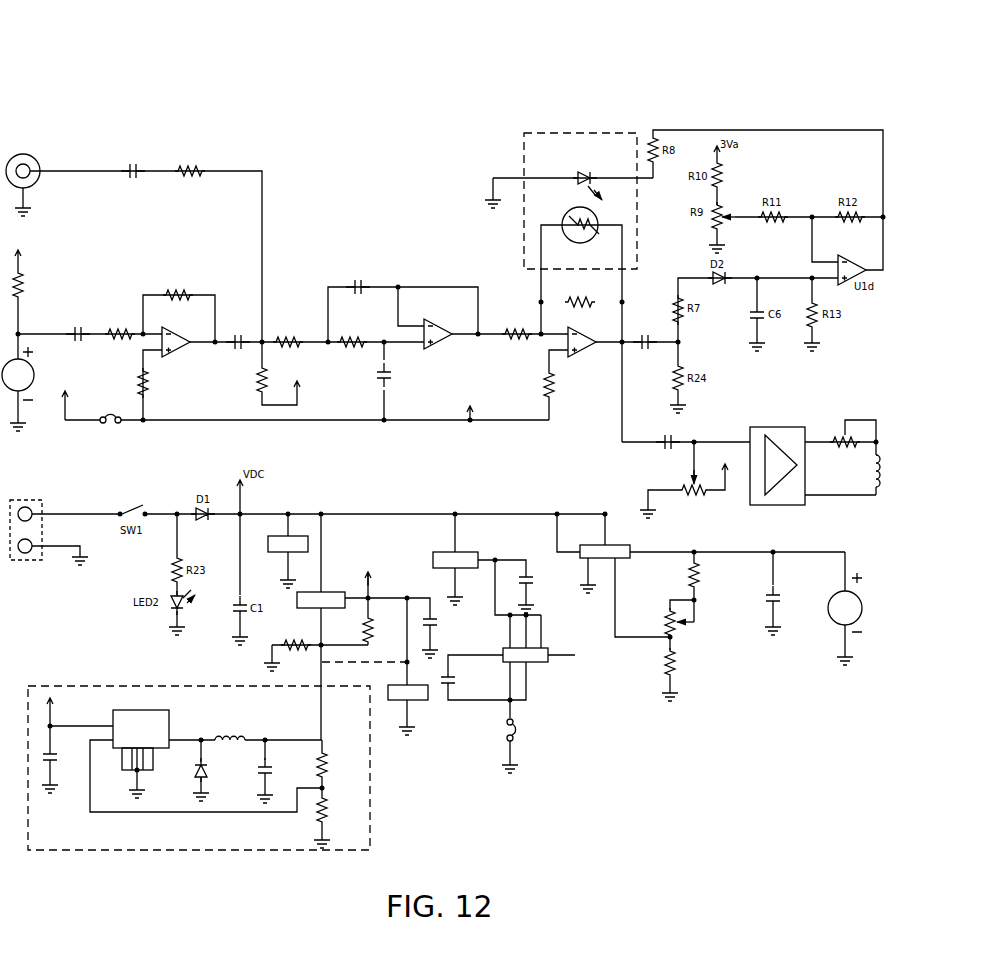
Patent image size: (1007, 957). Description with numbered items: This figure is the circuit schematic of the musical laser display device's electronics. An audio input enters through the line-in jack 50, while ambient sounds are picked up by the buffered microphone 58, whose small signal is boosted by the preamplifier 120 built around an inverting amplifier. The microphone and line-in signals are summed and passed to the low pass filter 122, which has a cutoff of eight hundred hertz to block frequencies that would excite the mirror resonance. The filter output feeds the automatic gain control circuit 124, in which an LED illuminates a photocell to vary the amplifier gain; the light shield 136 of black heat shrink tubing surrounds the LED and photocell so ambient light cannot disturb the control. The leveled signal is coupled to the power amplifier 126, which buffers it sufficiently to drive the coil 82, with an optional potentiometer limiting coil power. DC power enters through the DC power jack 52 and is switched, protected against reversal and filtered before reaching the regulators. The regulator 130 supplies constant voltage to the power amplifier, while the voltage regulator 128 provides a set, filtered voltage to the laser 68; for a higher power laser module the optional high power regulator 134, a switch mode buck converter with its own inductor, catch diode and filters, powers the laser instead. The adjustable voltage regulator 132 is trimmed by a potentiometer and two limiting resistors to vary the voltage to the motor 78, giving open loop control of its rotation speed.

The line-in jack 50 is at (77, 97).
The microphone 58 is at (38, 320).
The preamplifier 120 is at (183, 285).
The low pass filter 122 is at (398, 280).
The automatic gain control circuit 124 is at (518, 287).
The light shield 136 is at (603, 128).
The power amplifier 126 is at (758, 412).
The coil 82 is at (868, 400).
The DC power jack 52 is at (28, 575).
The voltage regulator 128 is at (347, 505).
The regulator 130 is at (446, 503).
The adjustable voltage regulator 132 is at (587, 503).
The laser 68 is at (425, 725).
The motor 78 is at (800, 655).
The high power regulator 134 is at (372, 812).